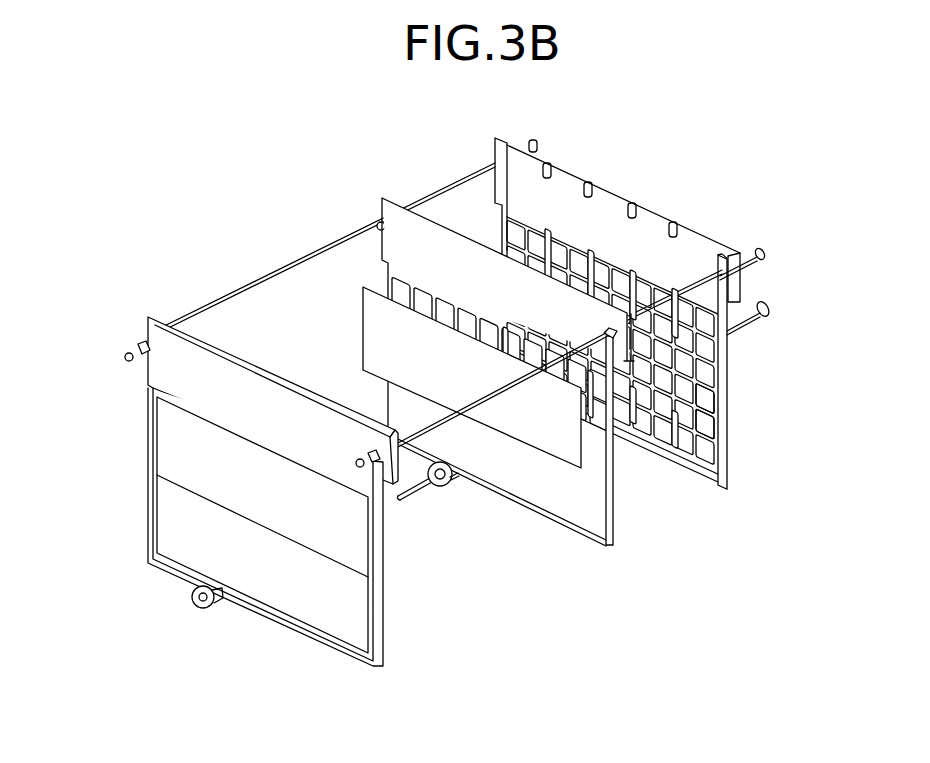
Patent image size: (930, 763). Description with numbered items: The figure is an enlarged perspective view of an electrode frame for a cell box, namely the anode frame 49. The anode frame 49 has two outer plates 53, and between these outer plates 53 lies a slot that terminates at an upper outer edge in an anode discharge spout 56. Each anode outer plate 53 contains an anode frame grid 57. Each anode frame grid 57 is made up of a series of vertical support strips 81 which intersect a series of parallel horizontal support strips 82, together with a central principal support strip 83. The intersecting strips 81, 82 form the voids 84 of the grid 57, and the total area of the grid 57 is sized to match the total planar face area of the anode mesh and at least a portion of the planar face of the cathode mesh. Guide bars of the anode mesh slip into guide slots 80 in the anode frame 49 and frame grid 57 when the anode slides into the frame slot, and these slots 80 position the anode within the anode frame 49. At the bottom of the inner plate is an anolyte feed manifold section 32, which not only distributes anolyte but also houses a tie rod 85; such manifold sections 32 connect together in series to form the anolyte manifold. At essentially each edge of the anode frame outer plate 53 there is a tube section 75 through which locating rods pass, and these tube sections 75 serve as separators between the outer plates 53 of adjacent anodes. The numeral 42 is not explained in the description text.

The anolyte feed manifold section 32 is at (452, 478).
The front panel 42 is at (124, 459).
The anode frame 49 is at (340, 154).
The outer plate 53 is at (412, 240).
The anode discharge spout 56 is at (745, 283).
The anode frame grid 57 is at (713, 360).
The tube section 75 is at (378, 224).
The guide slot 80 is at (592, 185).
The vertical support strip 81 is at (363, 290).
The horizontal support strip 82 is at (715, 463).
The central principal support strip 83 is at (710, 393).
The void 84 is at (708, 430).
The tie rod 85 is at (418, 495).